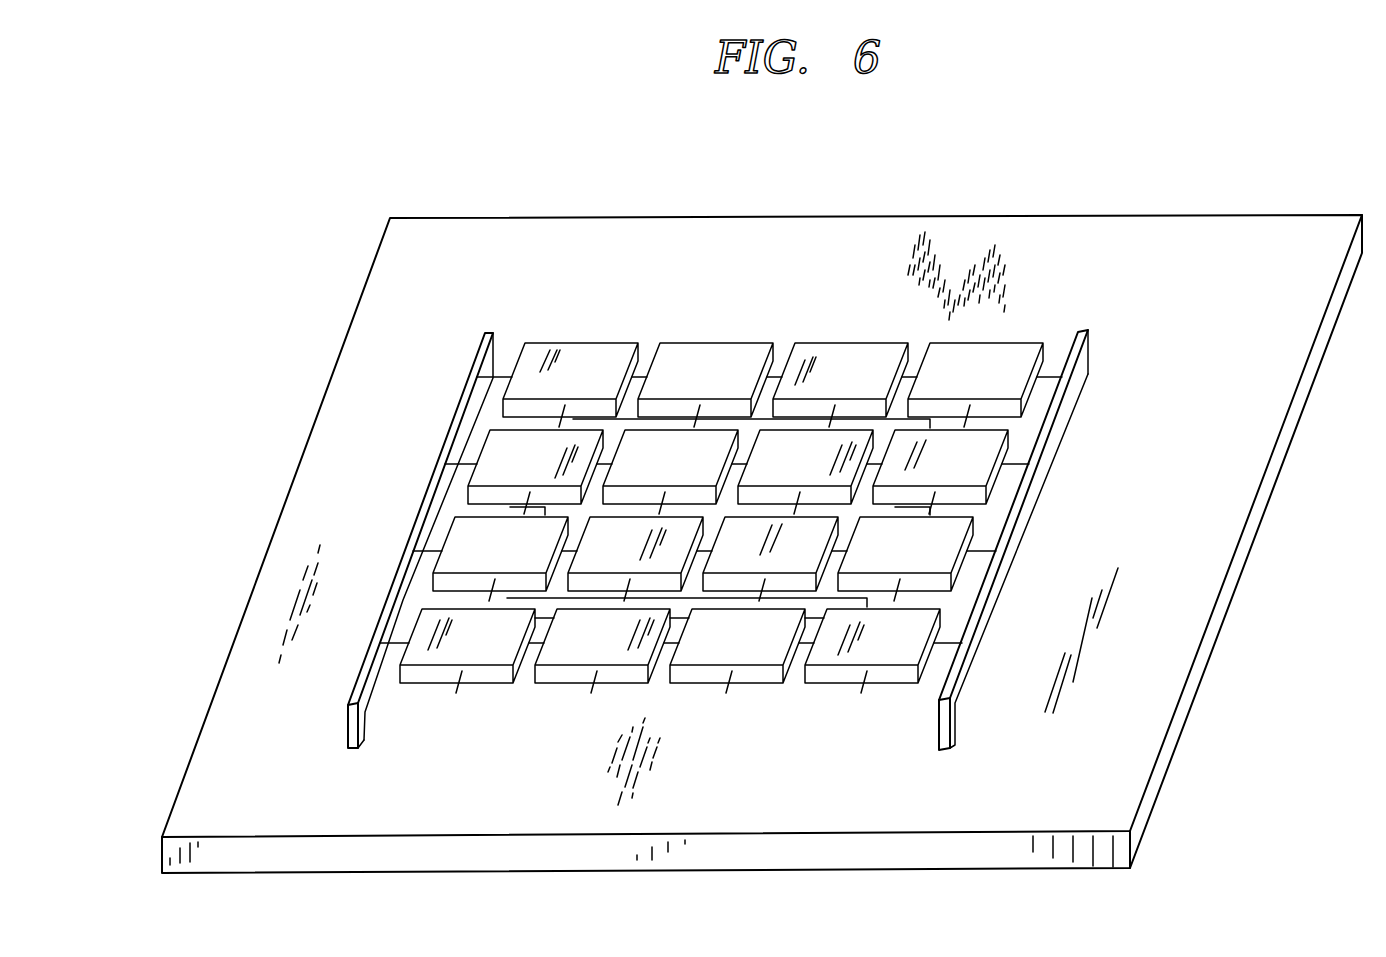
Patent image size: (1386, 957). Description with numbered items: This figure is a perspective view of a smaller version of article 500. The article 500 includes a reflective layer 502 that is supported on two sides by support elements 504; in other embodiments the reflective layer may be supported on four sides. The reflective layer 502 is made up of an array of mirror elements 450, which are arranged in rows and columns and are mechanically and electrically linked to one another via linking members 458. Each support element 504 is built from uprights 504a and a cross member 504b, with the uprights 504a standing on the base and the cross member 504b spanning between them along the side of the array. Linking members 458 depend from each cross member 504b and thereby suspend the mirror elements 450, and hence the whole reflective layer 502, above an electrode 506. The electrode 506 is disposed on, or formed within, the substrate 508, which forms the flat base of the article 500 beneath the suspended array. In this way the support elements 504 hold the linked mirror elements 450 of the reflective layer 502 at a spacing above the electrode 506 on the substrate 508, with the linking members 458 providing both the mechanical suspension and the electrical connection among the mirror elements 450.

The article 500 is at (776, 173).
The substrate 508 is at (372, 266).
The reflective layer 502 is at (653, 332).
The mirror elements 450 is at (962, 353).
The support elements 504 is at (1090, 343).
The uprights 504a is at (1088, 378).
The cross member 504b is at (1030, 514).
The linking members 458 is at (392, 645).
The electrode 506 is at (813, 617).